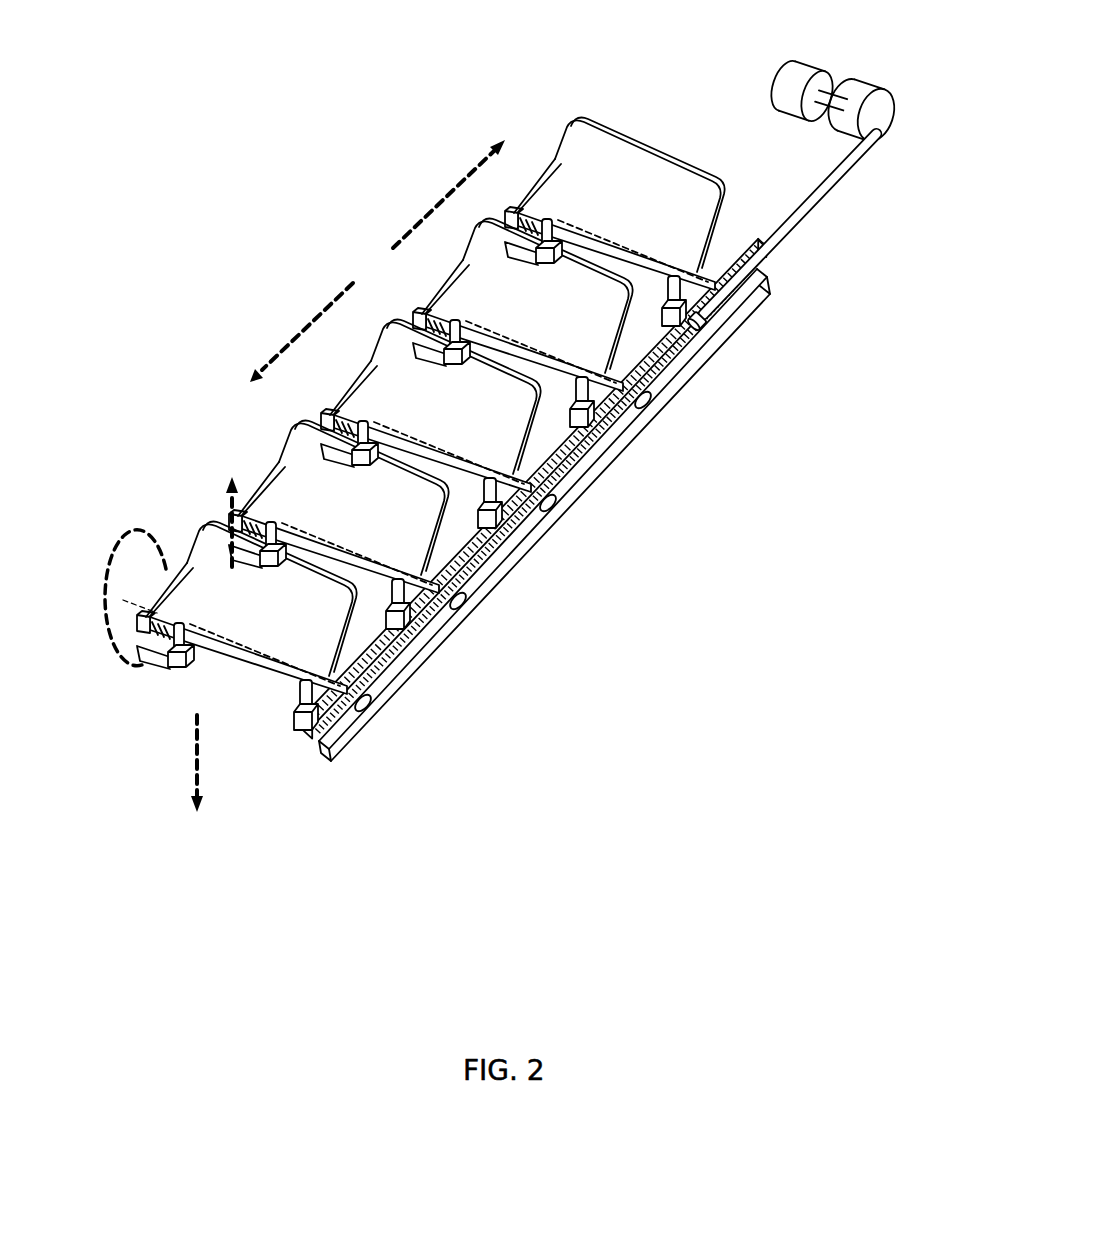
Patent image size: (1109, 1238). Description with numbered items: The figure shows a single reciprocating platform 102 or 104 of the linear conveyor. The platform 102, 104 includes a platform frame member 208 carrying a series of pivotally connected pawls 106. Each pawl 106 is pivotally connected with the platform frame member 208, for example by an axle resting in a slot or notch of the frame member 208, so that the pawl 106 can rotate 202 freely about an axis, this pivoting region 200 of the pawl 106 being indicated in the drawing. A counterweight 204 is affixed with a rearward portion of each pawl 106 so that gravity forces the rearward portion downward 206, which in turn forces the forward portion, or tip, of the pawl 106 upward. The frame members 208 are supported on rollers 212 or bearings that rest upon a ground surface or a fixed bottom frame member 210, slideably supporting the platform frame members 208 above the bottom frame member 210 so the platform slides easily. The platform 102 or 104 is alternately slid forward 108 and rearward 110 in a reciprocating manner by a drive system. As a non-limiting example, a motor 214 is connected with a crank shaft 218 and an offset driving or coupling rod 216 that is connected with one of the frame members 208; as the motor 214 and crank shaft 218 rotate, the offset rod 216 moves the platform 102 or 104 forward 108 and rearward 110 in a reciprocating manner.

The reciprocating platform 102 is at (203, 57).
The reciprocating platform 104 is at (504, 428).
The pawl 106 is at (218, 592).
The forward direction 108 is at (470, 173).
The rearward direction 110 is at (320, 315).
The drive roller 200 is at (110, 562).
The rotation 202 is at (350, 686).
The counterweight 204 is at (182, 665).
The downward direction 206 is at (200, 777).
The platform frame member 208 is at (267, 488).
The bottom frame member 210 is at (557, 517).
The roller 212 is at (636, 402).
The motor 214 is at (810, 73).
The offset rod 216 is at (779, 249).
The crank shaft 218 is at (880, 103).